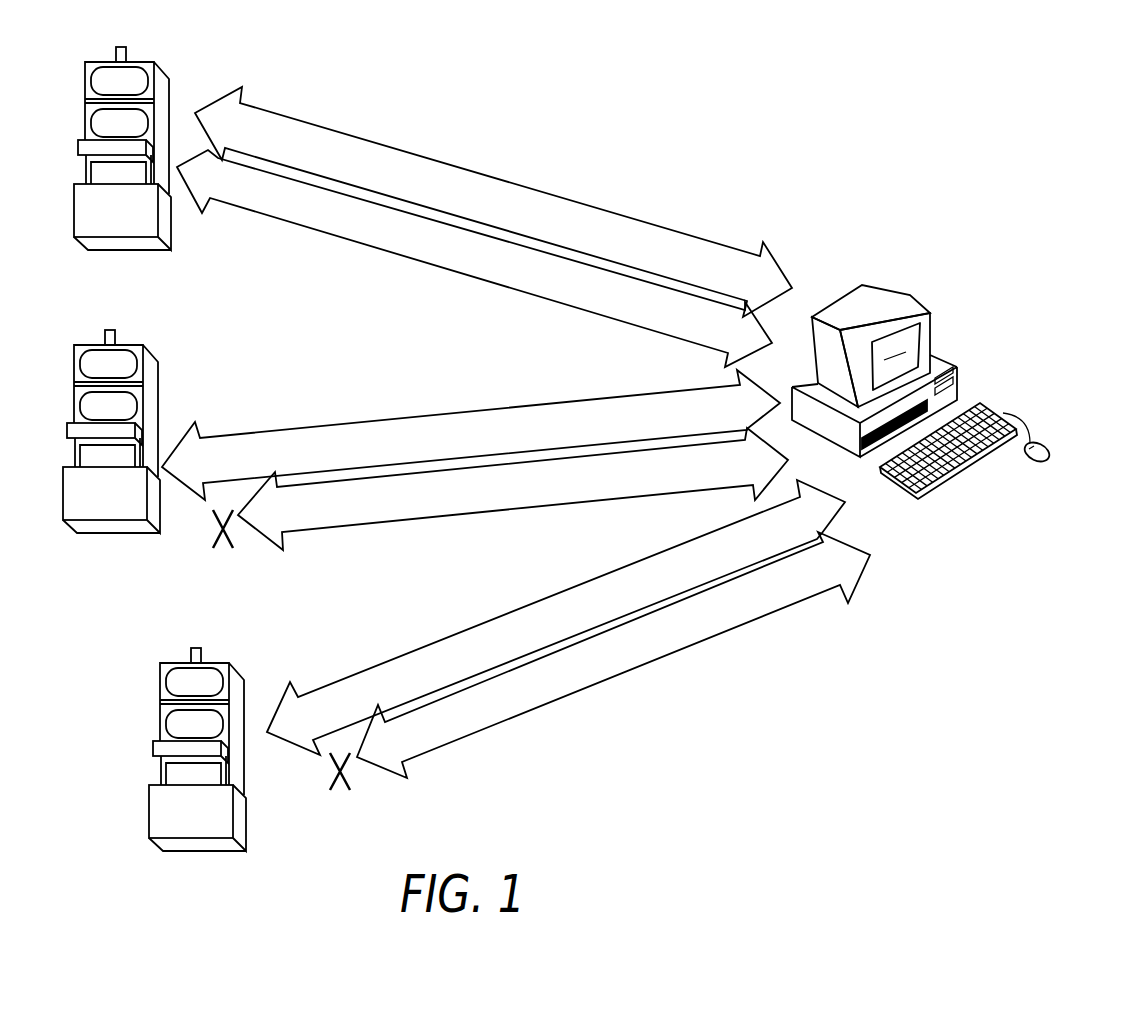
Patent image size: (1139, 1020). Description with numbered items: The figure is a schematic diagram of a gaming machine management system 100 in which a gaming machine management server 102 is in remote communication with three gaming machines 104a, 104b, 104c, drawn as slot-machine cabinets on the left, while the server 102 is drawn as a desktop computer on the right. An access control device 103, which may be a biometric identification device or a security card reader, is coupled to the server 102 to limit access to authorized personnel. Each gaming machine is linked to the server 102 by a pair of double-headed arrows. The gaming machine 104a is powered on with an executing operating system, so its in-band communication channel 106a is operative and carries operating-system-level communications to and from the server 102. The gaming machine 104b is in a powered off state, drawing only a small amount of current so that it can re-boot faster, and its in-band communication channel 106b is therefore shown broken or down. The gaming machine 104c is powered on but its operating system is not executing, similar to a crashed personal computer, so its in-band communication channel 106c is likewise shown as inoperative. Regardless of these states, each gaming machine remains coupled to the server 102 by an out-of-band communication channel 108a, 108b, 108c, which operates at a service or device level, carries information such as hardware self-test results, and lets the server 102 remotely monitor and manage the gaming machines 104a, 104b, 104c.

The gaming machine management system 100 is at (672, 95).
The gaming machine management server 102 is at (915, 298).
The access control device 103 is at (1043, 445).
The gaming machine 104a is at (170, 85).
The gaming machine 104b is at (158, 370).
The gaming machine 104c is at (245, 687).
The in-band communication channel 106a is at (470, 275).
The in-band communication channel 106b is at (517, 510).
The in-band communication channel 106c is at (622, 675).
The out-of-band communication channel 108a is at (500, 178).
The out-of-band communication channel 108b is at (468, 412).
The out-of-band communication channel 108c is at (550, 595).